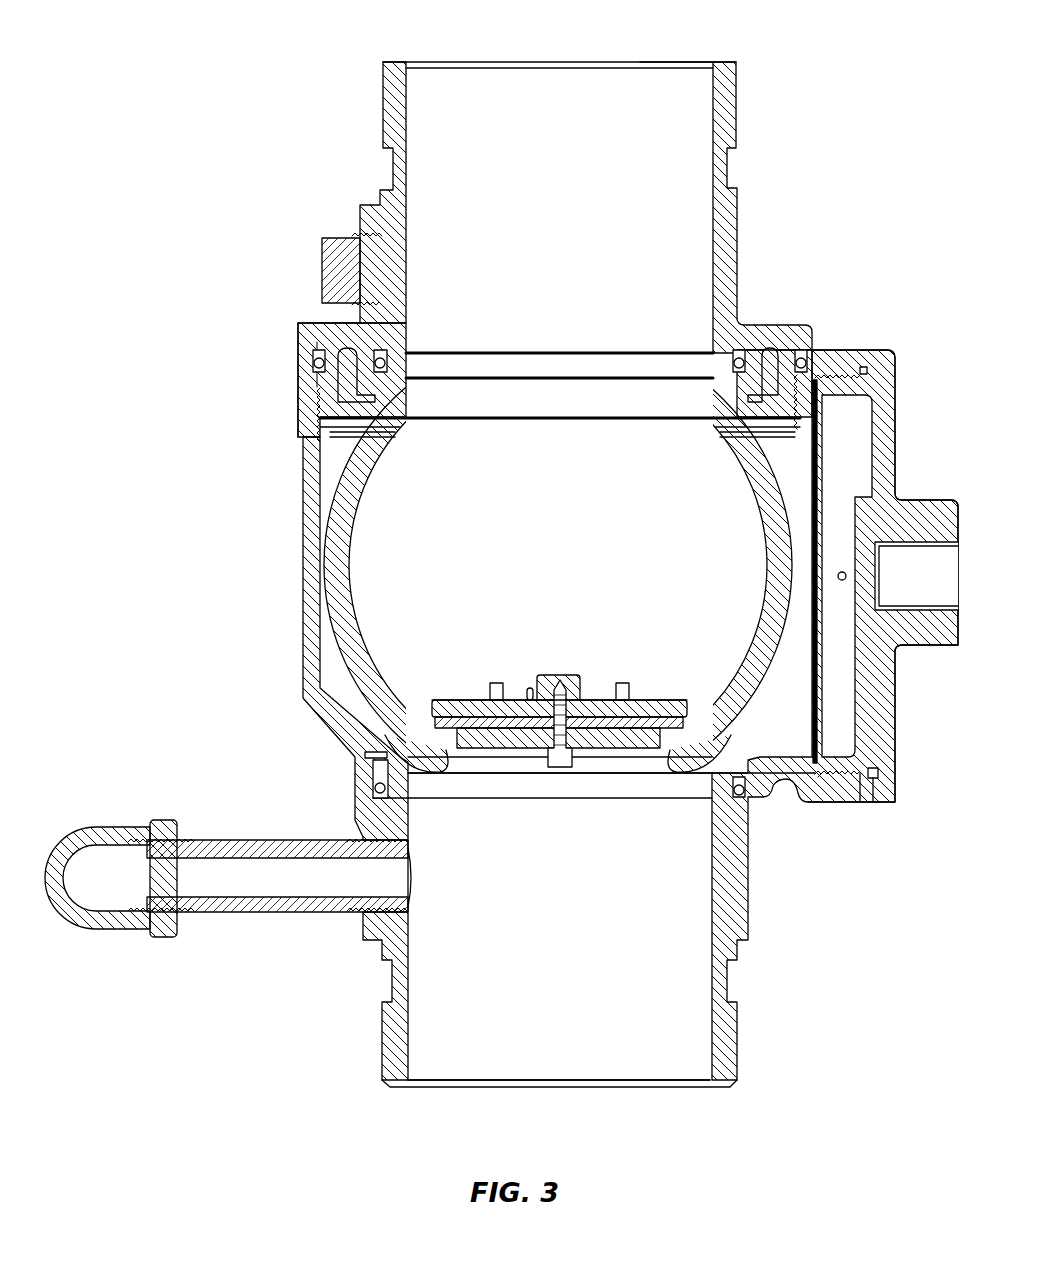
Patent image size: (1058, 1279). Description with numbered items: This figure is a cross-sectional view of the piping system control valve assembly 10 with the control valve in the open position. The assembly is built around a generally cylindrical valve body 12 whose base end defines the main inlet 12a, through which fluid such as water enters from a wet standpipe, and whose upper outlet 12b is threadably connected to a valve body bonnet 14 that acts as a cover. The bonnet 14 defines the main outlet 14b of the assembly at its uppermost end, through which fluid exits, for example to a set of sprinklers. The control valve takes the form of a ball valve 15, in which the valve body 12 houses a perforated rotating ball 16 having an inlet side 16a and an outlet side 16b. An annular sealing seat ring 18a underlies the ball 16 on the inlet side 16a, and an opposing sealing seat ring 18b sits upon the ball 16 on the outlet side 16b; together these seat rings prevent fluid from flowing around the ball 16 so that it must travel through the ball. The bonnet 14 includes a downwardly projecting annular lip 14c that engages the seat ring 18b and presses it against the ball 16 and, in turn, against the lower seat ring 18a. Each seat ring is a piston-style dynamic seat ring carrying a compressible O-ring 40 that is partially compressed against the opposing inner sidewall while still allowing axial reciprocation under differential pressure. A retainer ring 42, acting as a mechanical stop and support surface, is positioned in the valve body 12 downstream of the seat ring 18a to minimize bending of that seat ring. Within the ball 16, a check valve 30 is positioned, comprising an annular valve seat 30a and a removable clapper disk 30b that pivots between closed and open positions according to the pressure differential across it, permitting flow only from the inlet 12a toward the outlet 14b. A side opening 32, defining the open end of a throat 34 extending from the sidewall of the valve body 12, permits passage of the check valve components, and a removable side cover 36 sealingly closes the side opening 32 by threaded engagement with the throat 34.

The piping system control valve assembly 10 is at (842, 128).
The valve body 12 is at (298, 547).
The inlet of the valve body 12a is at (642, 1088).
The outlet of the valve body 12b is at (300, 335).
The valve body bonnet 14 is at (742, 107).
The main outlet 14b is at (648, 62).
The annular lip 14c is at (353, 380).
The ball valve 15 is at (336, 477).
The ball 16 is at (337, 630).
The inlet side of the ball 16a is at (700, 745).
The outlet side of the ball 16b is at (408, 407).
The sealing seat ring 18a is at (375, 760).
The sealing seat ring 18b is at (405, 368).
The check valve 30 is at (643, 690).
The valve seat 30a is at (443, 737).
The clapper disk 30b is at (476, 699).
The side opening 32 is at (878, 792).
The throat 34 is at (833, 795).
The side cover 36 is at (897, 438).
The O-ring 40 is at (740, 357).
The retainer ring 42 is at (757, 730).